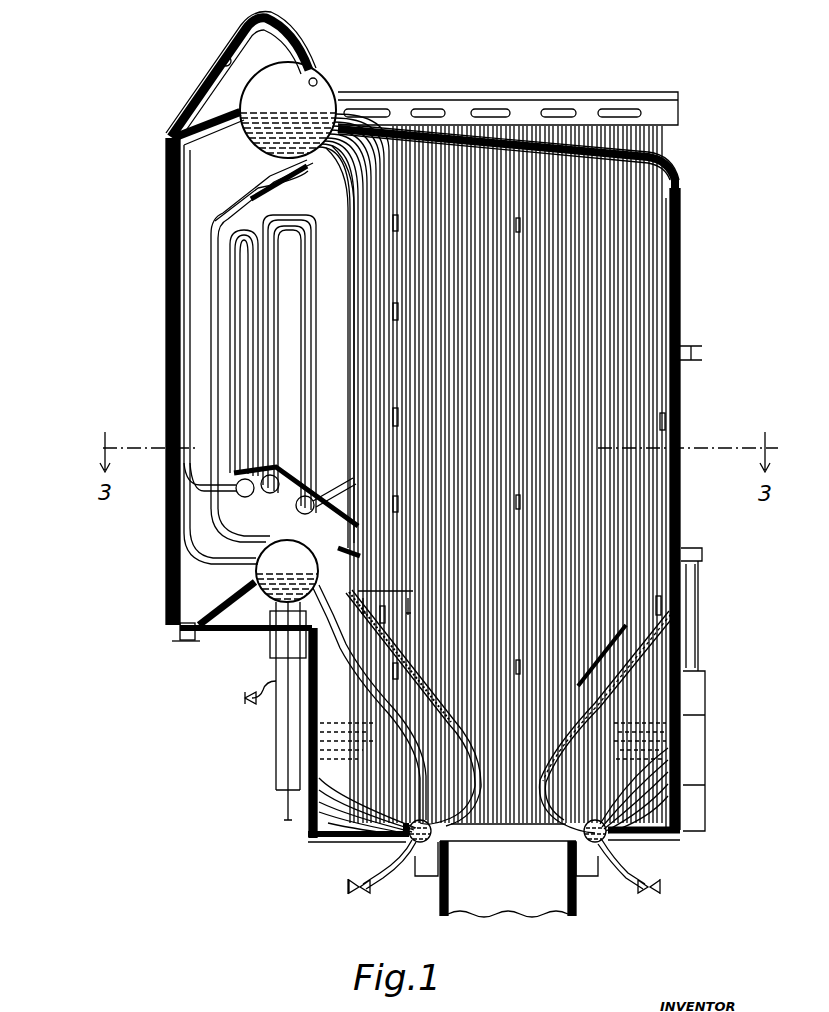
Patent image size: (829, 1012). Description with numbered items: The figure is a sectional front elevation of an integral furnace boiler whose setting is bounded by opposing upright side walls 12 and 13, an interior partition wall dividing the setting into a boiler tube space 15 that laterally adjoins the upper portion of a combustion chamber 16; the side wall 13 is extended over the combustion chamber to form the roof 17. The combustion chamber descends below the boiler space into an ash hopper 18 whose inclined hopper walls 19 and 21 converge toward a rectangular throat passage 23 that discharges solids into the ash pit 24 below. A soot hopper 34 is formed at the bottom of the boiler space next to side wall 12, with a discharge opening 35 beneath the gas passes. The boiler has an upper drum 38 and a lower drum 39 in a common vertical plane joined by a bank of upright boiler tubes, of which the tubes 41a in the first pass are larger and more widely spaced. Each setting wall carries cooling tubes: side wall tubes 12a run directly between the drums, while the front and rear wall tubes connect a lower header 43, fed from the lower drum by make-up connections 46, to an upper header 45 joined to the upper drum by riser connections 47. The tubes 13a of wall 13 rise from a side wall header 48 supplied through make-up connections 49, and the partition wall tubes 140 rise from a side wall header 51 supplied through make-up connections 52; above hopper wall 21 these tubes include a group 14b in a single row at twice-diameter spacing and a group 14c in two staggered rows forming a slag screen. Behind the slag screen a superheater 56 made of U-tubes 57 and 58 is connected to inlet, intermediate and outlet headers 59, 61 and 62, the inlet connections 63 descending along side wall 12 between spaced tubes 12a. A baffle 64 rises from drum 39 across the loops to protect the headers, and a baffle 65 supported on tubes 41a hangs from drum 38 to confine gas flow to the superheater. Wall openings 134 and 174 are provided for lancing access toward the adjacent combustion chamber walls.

The side wall 12 is at (160, 295).
The side wall tubes 12a is at (176, 305).
The side wall 13 is at (672, 297).
The side wall tubes 13a is at (668, 376).
The tube group 14b is at (357, 382).
The tube group 14c is at (366, 340).
The boiler tube space 15 is at (330, 356).
The combustion chamber 16 is at (515, 578).
The roof 17 is at (500, 134).
The ash hopper 18 is at (548, 738).
The inclined hopper wall 19 is at (576, 756).
The inclined hopper wall 21 is at (396, 673).
The throat passage 23 is at (508, 784).
The ash pit 24 is at (506, 871).
The soot hopper 34 is at (200, 591).
The discharge opening 35 is at (177, 635).
The upper drum 38 is at (325, 86).
The lower drum 39 is at (260, 552).
The boiler tubes 41a is at (345, 200).
The lower header 43 is at (662, 834).
The upper header 45 is at (622, 92).
The make-up connections 46 is at (341, 780).
The riser connections 47 is at (480, 103).
The side wall header 48 is at (600, 834).
The make-up connections 49 is at (598, 777).
The side wall header 51 is at (398, 840).
The make-up connections 52 is at (346, 668).
The superheater 56 is at (298, 336).
The U-tubes 57 is at (226, 254).
The U-tubes 58 is at (304, 258).
The inlet header 59 is at (236, 490).
The intermediate header 61 is at (260, 485).
The outlet header 62 is at (294, 506).
The inlet connections 63 is at (192, 63).
The baffle 64 is at (308, 492).
The baffle 65 is at (258, 180).
The wall opening 134 is at (391, 408).
The partition wall tubes 140 is at (388, 665).
The wall opening 174 is at (658, 416).